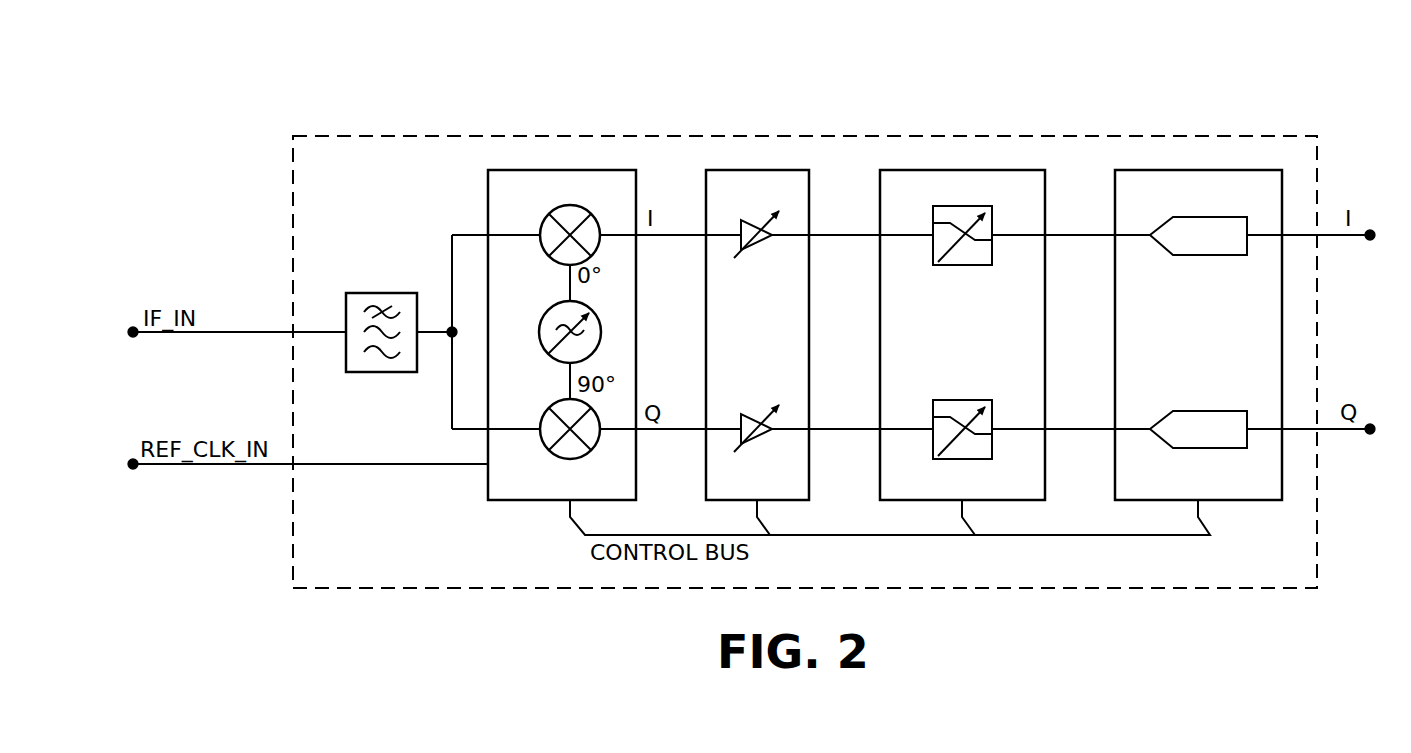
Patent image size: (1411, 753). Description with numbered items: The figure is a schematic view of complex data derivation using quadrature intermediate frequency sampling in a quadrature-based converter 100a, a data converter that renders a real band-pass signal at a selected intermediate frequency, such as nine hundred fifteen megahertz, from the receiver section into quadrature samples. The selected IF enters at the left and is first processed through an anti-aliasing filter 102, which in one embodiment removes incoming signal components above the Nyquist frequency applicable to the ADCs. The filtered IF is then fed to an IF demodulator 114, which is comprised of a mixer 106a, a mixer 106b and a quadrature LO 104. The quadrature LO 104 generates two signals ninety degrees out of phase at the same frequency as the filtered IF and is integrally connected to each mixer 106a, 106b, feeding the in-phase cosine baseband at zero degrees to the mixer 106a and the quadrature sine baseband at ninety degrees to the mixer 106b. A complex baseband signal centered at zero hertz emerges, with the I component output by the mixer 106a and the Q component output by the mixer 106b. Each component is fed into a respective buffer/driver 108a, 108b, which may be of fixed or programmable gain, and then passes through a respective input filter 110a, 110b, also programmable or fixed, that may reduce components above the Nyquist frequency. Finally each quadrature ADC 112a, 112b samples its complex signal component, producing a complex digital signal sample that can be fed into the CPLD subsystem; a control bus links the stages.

The quadrature-based converter 100a is at (286, 92).
The anti-aliasing filter 102 is at (358, 292).
The quadrature LO 104 is at (560, 302).
The mixer 106a is at (562, 207).
The mixer 106b is at (568, 459).
The buffer/driver 108a is at (757, 249).
The buffer/driver 108b is at (758, 445).
The input filter 110a is at (975, 265).
The input filter 110b is at (948, 400).
The quadrature ADC 112a is at (1212, 255).
The quadrature ADC 112b is at (1185, 411).
The IF demodulator 114 is at (488, 197).